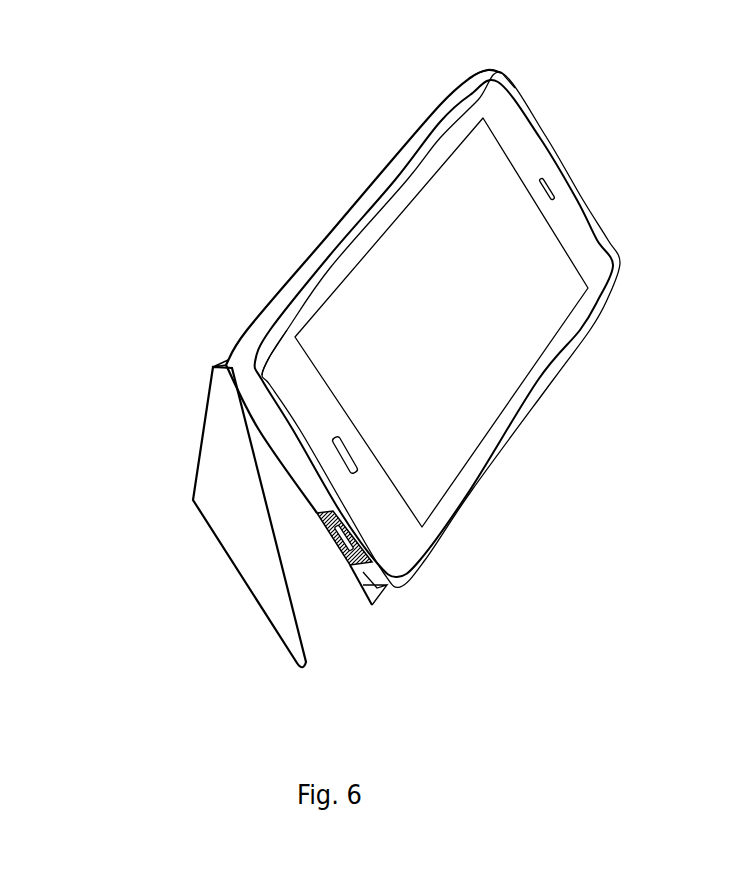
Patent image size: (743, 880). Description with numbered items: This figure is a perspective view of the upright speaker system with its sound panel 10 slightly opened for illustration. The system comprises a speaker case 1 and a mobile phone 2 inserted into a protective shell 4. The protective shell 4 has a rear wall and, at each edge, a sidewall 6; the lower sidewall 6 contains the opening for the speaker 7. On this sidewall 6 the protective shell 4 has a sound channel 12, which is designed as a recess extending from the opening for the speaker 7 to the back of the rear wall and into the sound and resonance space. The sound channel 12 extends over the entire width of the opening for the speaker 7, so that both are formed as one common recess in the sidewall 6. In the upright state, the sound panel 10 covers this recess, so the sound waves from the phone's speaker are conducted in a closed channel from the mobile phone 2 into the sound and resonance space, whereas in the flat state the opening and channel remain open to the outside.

The speaker case 1 is at (615, 200).
The mobile phone 2 is at (467, 200).
The protective shell 4 is at (503, 73).
The sidewall 6 is at (273, 442).
The opening for the speaker 7 is at (373, 603).
The sound panel 10 is at (253, 588).
The sound channel 12 is at (343, 567).